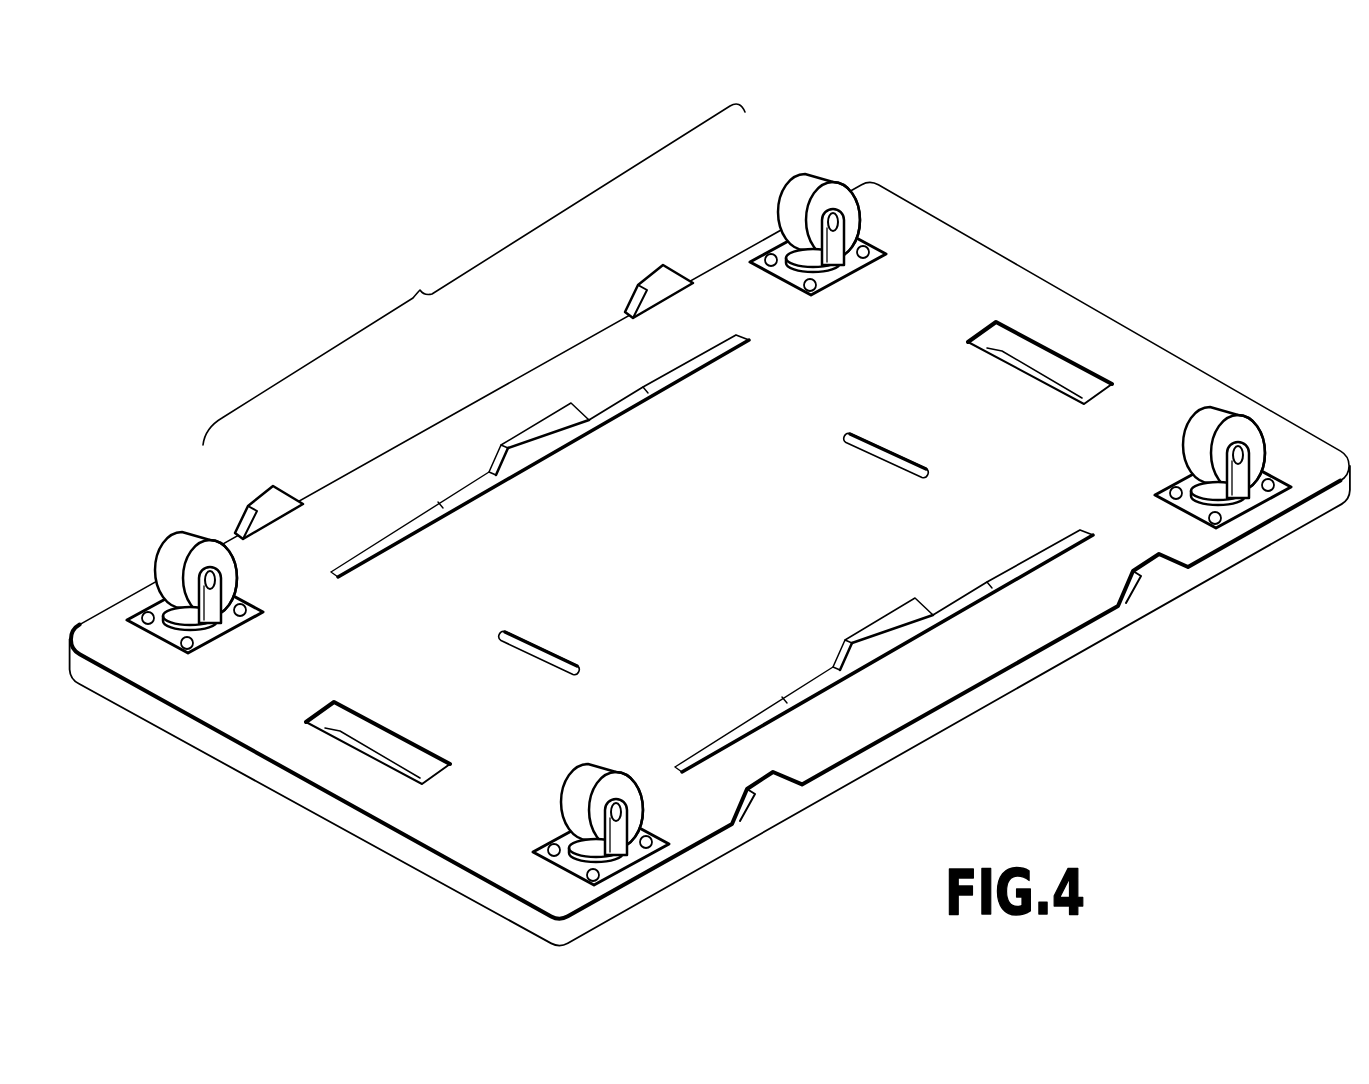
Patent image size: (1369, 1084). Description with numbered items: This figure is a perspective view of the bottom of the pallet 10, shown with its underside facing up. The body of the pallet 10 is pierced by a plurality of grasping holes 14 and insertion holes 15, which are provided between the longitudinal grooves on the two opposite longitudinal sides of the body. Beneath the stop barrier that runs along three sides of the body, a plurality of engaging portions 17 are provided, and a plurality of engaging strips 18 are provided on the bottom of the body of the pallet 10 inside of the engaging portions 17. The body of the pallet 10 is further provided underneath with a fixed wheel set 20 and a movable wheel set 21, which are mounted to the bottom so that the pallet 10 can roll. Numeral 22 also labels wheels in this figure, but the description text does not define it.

The pallet 10 is at (1046, 198).
The grasping holes 14 is at (1050, 378).
The insertion holes 15 is at (528, 638).
The engaging portions 17 is at (267, 492).
The engaging strips 18 is at (537, 428).
The fixed wheel set 20 is at (474, 274).
The movable wheel set 21 is at (807, 190).
The caster 22 is at (183, 548).